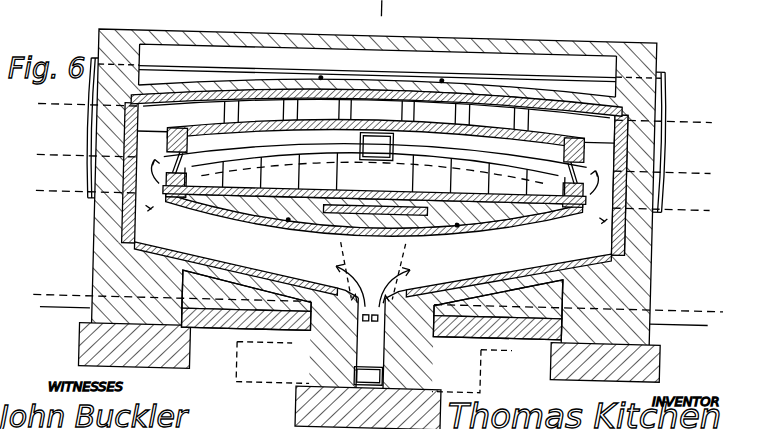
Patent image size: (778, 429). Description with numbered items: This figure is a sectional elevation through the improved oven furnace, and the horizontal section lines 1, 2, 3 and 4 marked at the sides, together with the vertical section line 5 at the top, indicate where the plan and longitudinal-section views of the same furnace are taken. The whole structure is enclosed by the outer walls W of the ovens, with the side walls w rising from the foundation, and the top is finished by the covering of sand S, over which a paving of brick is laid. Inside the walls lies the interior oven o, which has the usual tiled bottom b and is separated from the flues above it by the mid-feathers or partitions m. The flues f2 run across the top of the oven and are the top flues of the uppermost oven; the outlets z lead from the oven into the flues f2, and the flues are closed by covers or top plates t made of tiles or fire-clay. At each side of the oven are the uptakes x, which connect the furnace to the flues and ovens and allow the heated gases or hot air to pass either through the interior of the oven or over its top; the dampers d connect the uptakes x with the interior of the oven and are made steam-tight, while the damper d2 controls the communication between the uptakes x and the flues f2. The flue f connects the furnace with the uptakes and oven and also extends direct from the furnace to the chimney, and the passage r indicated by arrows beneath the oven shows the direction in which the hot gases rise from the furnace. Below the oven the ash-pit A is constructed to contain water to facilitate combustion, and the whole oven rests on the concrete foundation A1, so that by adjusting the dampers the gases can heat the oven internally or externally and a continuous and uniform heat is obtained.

The section line 1 1 is at (376, 306).
The section line 2 2 is at (370, 200).
The section line 3 3 is at (371, 163).
The section line 4 4 is at (372, 113).
The section line 5 5 is at (387, 10).
The covering of sand S is at (377, 64).
The covers or top plates t is at (201, 96).
The outer walls of the ovens W is at (98, 248).
The casing wall w is at (657, 272).
The uptakes x is at (374, 204).
The damper d2 is at (160, 124).
The flues f2 is at (168, 116).
The mid-feathers or partitions m is at (376, 121).
The dampers d is at (188, 162).
The outlets from the ovens z is at (377, 147).
The tiled bottoms b is at (375, 172).
The interior oven o is at (381, 166).
The flue f is at (375, 170).
The funnel passage r is at (373, 275).
The ash-pit A is at (369, 343).
The concrete foundation A1 is at (140, 366).